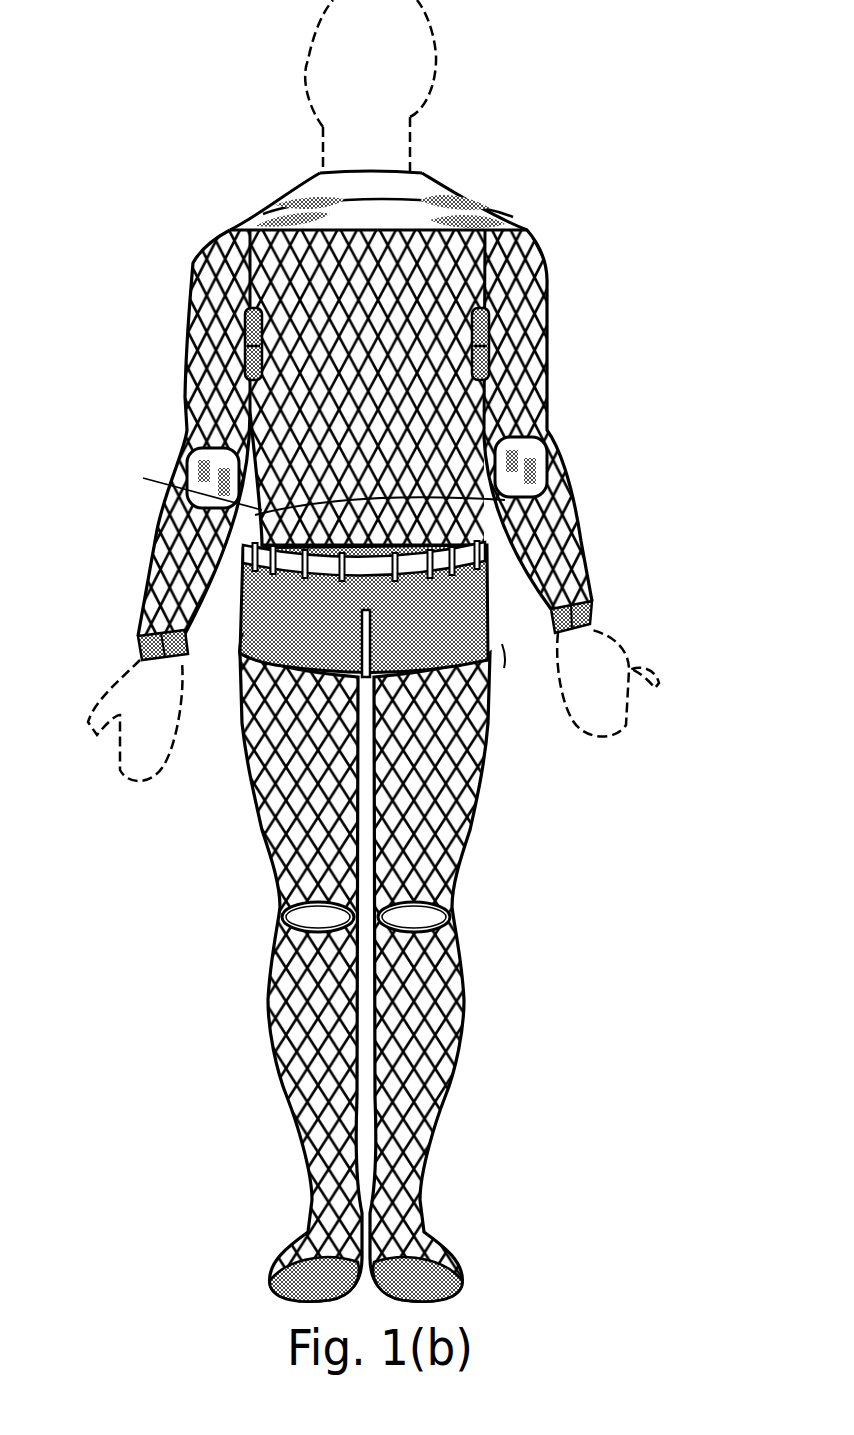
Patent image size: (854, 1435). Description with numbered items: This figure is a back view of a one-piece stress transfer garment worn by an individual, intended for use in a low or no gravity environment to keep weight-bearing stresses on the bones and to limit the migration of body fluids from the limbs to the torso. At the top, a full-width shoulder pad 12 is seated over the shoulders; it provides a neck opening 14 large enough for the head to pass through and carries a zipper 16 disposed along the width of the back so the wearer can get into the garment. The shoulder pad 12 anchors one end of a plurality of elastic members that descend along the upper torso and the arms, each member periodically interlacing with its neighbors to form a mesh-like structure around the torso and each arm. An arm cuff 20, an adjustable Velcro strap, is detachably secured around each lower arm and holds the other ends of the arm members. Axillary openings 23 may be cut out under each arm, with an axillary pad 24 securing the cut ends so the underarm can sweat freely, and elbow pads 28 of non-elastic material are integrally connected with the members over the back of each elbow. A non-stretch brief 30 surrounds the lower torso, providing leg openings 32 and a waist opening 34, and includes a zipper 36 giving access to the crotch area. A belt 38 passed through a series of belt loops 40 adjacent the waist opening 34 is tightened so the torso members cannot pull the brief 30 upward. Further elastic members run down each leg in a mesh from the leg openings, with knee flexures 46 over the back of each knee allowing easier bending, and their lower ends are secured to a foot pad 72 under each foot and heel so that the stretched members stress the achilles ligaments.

The shoulder pad 12 is at (457, 188).
The neck opening 14 is at (393, 170).
The zipper 16 is at (313, 197).
The arm cuff 20 is at (140, 640).
The axillary openings 23 is at (250, 308).
The axillary pad 24 is at (247, 348).
The elbow pads 28 is at (195, 455).
The brief 30 is at (427, 590).
The leg openings 32 is at (243, 633).
The waist opening 34 is at (189, 488).
The zipper 36 is at (362, 640).
The belt 38 is at (490, 512).
The belt loops 40 is at (480, 551).
The knee flexures 46 is at (282, 917).
The foot pad 72 is at (268, 1273).